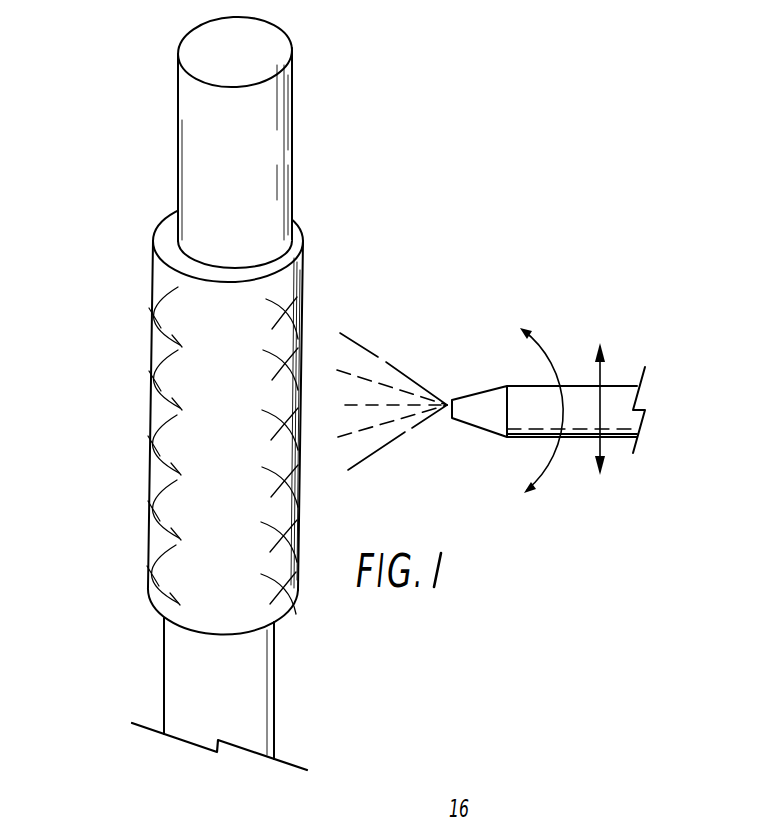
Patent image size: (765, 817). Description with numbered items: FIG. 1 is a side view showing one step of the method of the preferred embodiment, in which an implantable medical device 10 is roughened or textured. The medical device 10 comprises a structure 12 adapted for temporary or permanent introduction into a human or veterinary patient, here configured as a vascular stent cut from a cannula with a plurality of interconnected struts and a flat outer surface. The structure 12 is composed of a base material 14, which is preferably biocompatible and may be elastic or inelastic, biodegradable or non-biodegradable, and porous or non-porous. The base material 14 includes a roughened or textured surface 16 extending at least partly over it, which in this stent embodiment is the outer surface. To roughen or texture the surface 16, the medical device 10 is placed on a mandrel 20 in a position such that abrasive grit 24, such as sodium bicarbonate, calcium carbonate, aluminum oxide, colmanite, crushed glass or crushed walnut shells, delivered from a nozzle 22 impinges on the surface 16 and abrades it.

The implantable medical device 10 is at (343, 97).
The structure 12 is at (152, 302).
The base material 14 is at (297, 240).
The roughened or textured surface 16 is at (231, 341).
The mandrel 20 is at (175, 638).
The nozzle 22 is at (612, 393).
The abrasive grit 24 is at (384, 348).